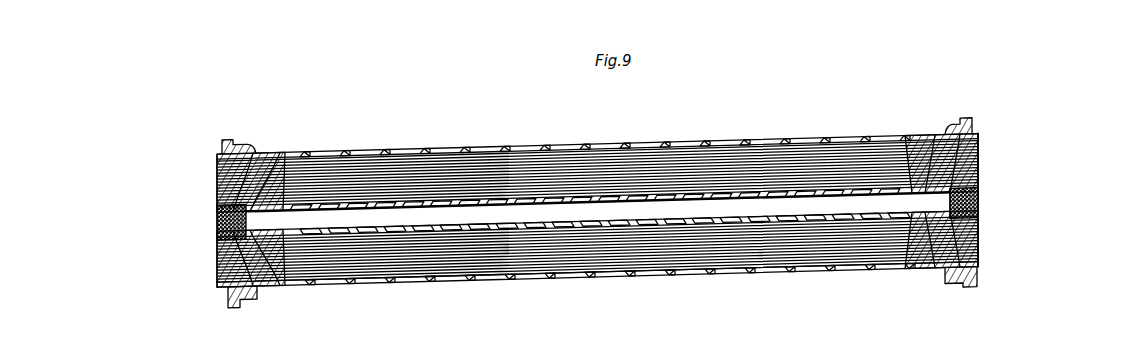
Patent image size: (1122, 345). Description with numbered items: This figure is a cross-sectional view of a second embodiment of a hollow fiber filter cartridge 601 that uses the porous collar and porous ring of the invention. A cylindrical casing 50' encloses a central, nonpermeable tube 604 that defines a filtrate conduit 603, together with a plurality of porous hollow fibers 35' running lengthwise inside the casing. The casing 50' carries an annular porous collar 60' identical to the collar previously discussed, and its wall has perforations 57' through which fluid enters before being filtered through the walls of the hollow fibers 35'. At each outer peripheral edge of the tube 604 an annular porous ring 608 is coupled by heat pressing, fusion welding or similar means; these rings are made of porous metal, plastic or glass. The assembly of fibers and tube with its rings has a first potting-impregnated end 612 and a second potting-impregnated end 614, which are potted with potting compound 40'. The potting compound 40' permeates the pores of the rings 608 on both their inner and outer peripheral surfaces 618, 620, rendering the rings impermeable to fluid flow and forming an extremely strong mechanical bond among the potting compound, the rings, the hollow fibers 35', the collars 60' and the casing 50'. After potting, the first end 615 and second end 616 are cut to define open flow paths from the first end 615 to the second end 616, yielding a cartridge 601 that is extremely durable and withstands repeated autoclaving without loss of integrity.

The hollow fiber filter cartridge 601 is at (755, 103).
The porous hollow fibers 35' is at (597, 139).
The potting compound 40' is at (597, 158).
The cylindrical casing 50' is at (605, 109).
The perforations 57' is at (610, 206).
The filtrate conduit 603 is at (353, 219).
The central nonpermeable tube 604 is at (413, 203).
The annular porous collar 60' is at (268, 213).
The first end 615 is at (219, 195).
The first potting-impregnated end 612 is at (262, 152).
The annular porous rings 608 is at (221, 240).
The inner peripheral surface 618 is at (978, 200).
The second potting-impregnated end 614 is at (918, 137).
The second end 616 is at (980, 160).
The outer peripheral surface 620 is at (982, 163).